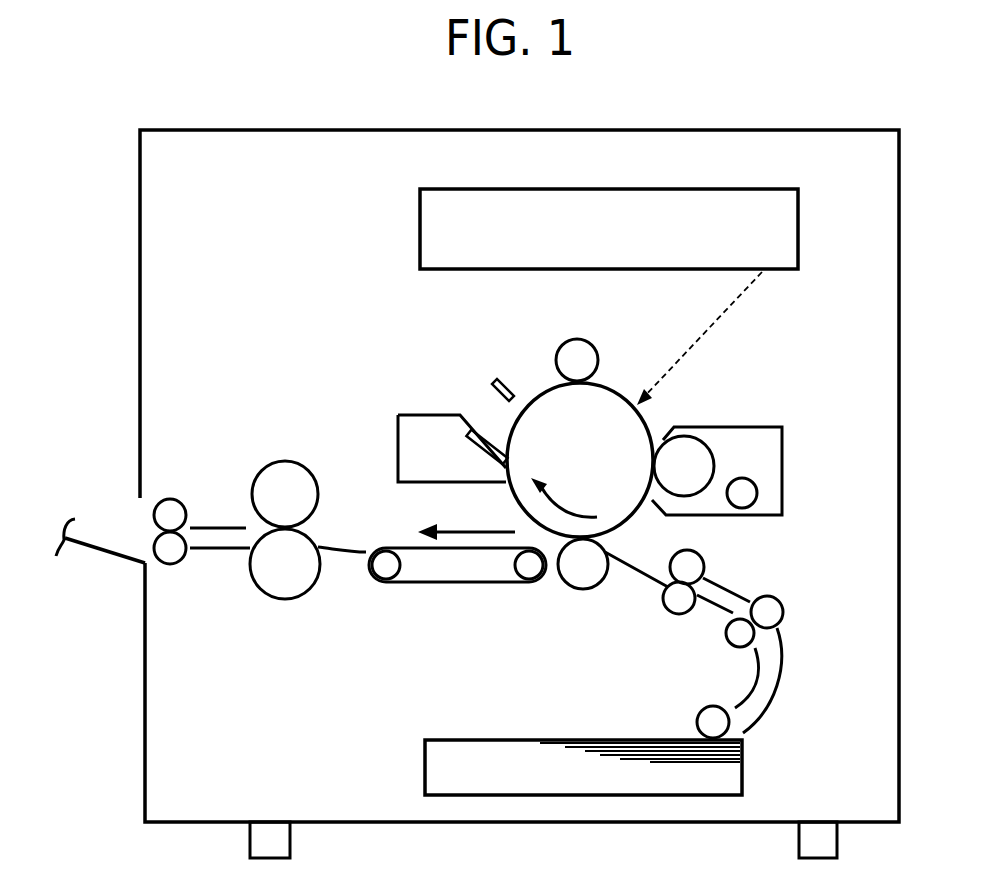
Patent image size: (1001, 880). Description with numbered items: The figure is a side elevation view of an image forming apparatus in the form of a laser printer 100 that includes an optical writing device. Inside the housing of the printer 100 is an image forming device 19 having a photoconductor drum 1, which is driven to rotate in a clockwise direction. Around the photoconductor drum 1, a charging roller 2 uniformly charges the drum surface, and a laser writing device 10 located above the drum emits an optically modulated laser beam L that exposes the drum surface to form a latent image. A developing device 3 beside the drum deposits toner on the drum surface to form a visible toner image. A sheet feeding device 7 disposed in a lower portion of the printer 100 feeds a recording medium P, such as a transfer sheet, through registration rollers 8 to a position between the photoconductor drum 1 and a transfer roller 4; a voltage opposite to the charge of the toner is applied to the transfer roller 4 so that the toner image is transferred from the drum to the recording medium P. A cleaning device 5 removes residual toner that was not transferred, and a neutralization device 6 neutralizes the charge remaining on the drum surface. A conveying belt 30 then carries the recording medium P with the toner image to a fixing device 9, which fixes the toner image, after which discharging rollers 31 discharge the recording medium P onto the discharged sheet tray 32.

The laser printer 100 is at (900, 240).
The laser writing device 10 is at (420, 229).
The laser beam L is at (688, 352).
The photoconductor drum 1 is at (657, 420).
The charging roller 2 is at (558, 357).
The neutralization device 6 is at (496, 381).
The cleaning device 5 is at (398, 446).
The developing device 3 is at (782, 462).
The image forming device 19 is at (745, 385).
The transfer roller 4 is at (583, 590).
The conveying belt 30 is at (463, 584).
The fixing device 9 is at (277, 461).
The discharging rollers 31 is at (173, 567).
The discharged sheet tray 32 is at (100, 552).
The registration rollers 8 is at (680, 613).
The sheet feeding device 7 is at (561, 736).
The recording medium P is at (490, 740).